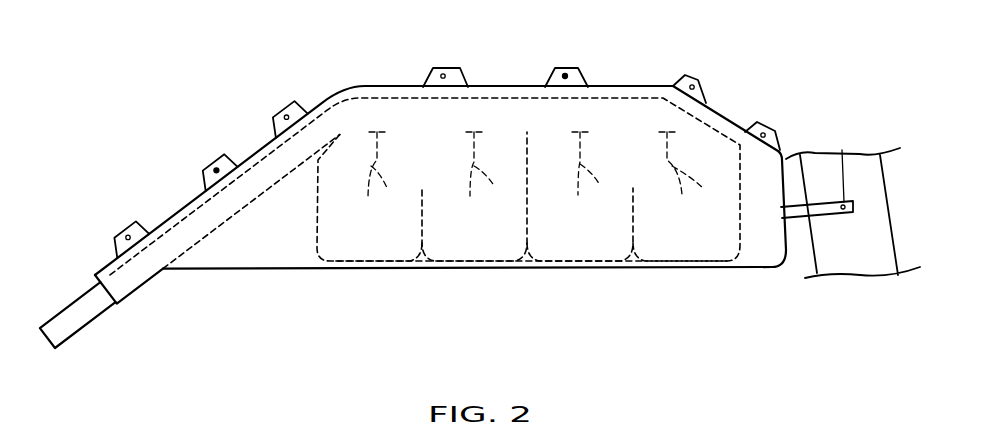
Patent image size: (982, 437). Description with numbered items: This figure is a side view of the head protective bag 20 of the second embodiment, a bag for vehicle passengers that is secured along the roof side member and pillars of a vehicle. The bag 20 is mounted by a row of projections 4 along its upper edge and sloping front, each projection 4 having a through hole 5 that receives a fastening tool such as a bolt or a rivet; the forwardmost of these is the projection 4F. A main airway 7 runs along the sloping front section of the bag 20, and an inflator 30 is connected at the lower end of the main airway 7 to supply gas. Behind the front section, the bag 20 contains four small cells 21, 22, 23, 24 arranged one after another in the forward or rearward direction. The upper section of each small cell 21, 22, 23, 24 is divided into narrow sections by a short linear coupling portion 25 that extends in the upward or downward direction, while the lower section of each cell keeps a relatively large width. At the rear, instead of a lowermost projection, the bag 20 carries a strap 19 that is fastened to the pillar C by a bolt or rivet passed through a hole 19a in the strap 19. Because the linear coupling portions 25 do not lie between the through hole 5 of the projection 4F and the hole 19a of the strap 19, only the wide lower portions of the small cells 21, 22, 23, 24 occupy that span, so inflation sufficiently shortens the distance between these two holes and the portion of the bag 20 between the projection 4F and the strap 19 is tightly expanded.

The bag 20 is at (630, 65).
The main airway 7 is at (178, 228).
The inflator 30 is at (70, 327).
The projection 4 is at (226, 158).
The projection 4F is at (140, 223).
The through hole 5 is at (125, 236).
The small cell 21 is at (363, 255).
The small cell 22 is at (477, 253).
The small cell 23 is at (580, 253).
The small cell 24 is at (688, 253).
The linear coupling portion 25 is at (546, 168).
The strap 19 is at (826, 219).
The hole 19a is at (845, 162).
The pillar C is at (880, 263).